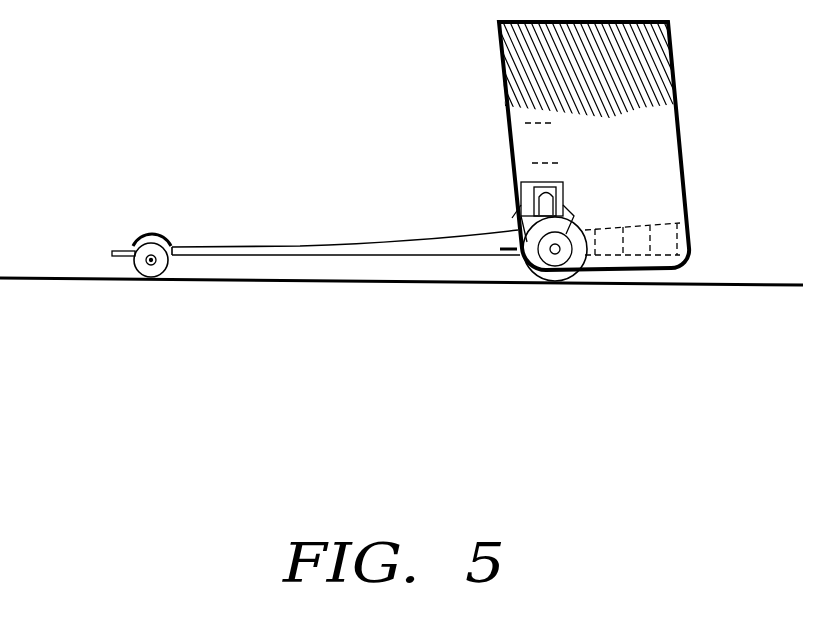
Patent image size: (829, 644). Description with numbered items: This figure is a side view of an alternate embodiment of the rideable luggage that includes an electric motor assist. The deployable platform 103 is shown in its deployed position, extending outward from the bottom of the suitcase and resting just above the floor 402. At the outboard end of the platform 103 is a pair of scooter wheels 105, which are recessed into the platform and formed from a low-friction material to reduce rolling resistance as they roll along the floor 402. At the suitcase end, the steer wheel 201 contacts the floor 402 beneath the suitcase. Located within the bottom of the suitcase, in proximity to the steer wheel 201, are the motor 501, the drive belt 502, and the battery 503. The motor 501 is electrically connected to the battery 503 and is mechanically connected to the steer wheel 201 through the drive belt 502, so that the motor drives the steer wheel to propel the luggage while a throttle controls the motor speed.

The deployable platform 103 is at (242, 248).
The scooter wheels 105 is at (135, 275).
The floor 402 is at (306, 282).
The steer wheel 201 is at (562, 284).
The motor 501 is at (572, 182).
The drive belt 502 is at (585, 204).
The battery 503 is at (610, 240).